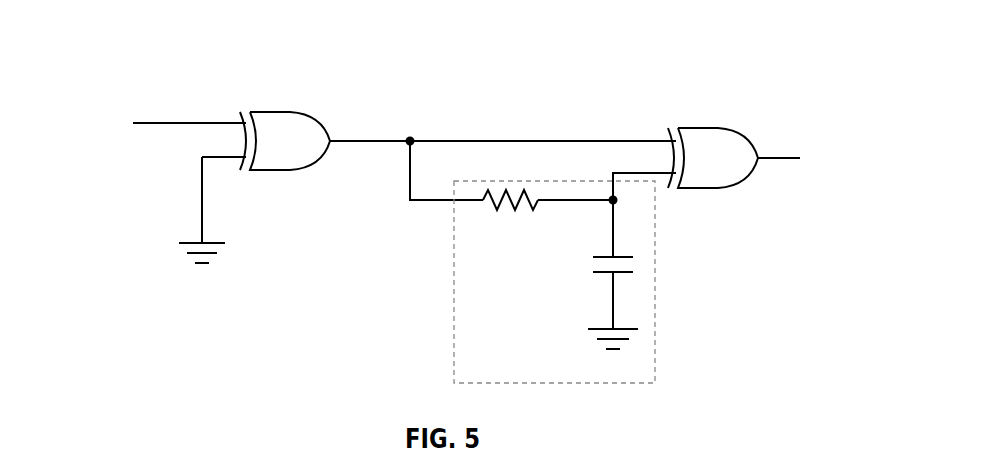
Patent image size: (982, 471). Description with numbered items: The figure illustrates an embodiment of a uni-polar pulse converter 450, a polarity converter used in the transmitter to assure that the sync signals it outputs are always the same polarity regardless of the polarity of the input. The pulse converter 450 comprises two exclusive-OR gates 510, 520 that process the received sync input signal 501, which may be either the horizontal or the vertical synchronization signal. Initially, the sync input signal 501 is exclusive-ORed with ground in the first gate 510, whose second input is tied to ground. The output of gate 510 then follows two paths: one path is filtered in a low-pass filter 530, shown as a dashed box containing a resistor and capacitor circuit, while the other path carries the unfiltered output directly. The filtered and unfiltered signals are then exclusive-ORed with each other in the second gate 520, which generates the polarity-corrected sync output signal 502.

The uni-polar pulse converter 450 is at (126, 32).
The sync input signal 501 is at (107, 96).
The sync output signal 502 is at (818, 130).
The exclusive-OR gate 510 is at (292, 112).
The exclusive-OR gate 520 is at (720, 128).
The low-pass filter 530 is at (455, 307).